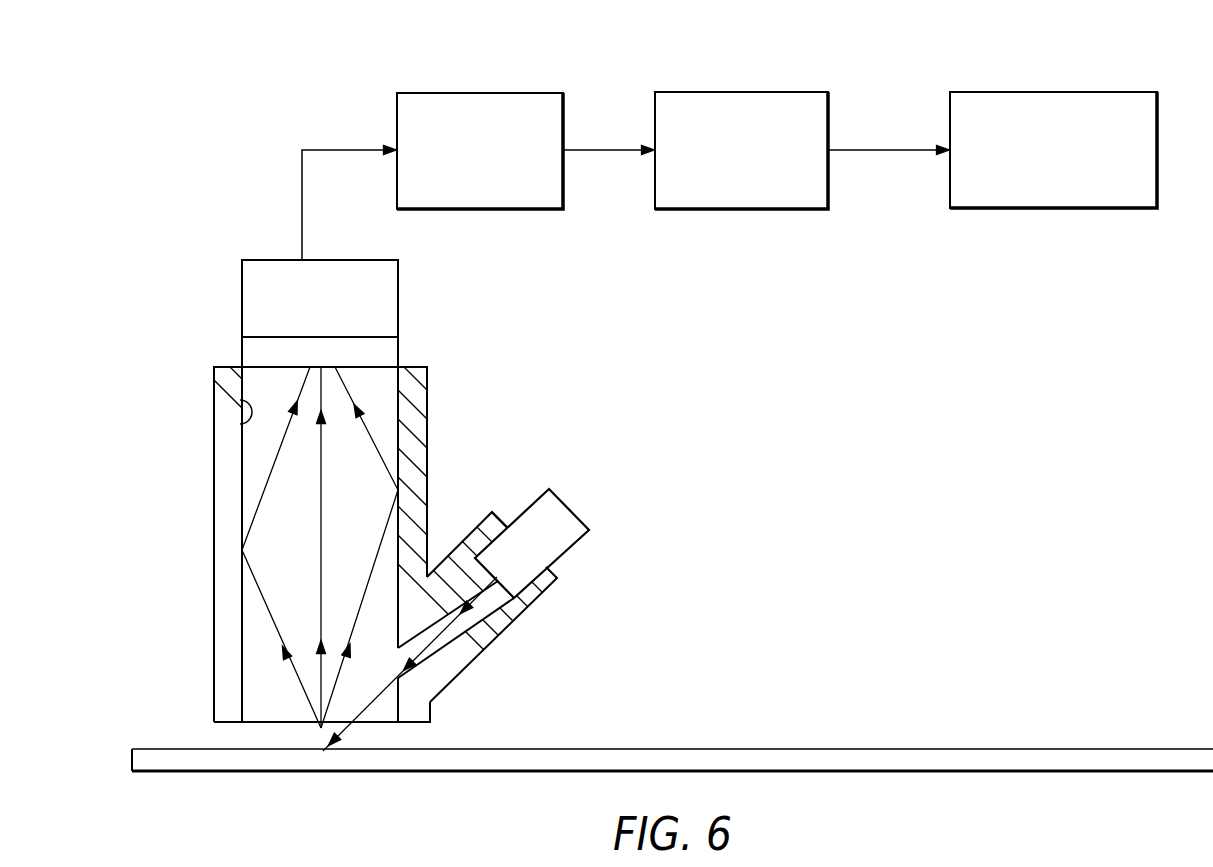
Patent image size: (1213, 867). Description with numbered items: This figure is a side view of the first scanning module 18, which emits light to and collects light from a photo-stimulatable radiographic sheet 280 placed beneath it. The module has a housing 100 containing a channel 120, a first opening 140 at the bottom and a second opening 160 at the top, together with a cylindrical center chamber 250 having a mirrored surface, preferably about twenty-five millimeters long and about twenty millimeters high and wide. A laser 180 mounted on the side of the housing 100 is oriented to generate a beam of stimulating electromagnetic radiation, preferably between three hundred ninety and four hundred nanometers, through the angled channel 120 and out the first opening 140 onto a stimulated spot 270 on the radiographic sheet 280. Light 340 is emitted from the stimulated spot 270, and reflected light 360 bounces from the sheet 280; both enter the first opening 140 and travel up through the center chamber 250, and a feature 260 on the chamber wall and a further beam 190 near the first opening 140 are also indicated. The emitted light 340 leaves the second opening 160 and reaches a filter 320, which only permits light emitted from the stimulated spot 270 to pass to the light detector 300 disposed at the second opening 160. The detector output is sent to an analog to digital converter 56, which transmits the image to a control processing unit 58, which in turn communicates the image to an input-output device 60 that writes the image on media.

The analog to digital converter 56 is at (508, 93).
The control processing unit 58 is at (762, 92).
The input-output device 60 is at (1038, 92).
The light detector 300 is at (400, 281).
The filter 320 is at (400, 351).
The second opening 160 is at (272, 367).
The housing 100 is at (430, 436).
The center chamber 250 is at (255, 686).
The inner wall feature 260 is at (238, 402).
The channel 120 is at (450, 637).
The laser 180 is at (567, 547).
The first scanning module 18 is at (600, 456).
The emitted light 340 is at (320, 497).
The reflected light 360 is at (373, 567).
The incident light beam 190 is at (367, 707).
The first opening 140 is at (275, 722).
The stimulated spot 270 is at (320, 750).
The photo-stimulatable radiographic sheet 280 is at (773, 748).